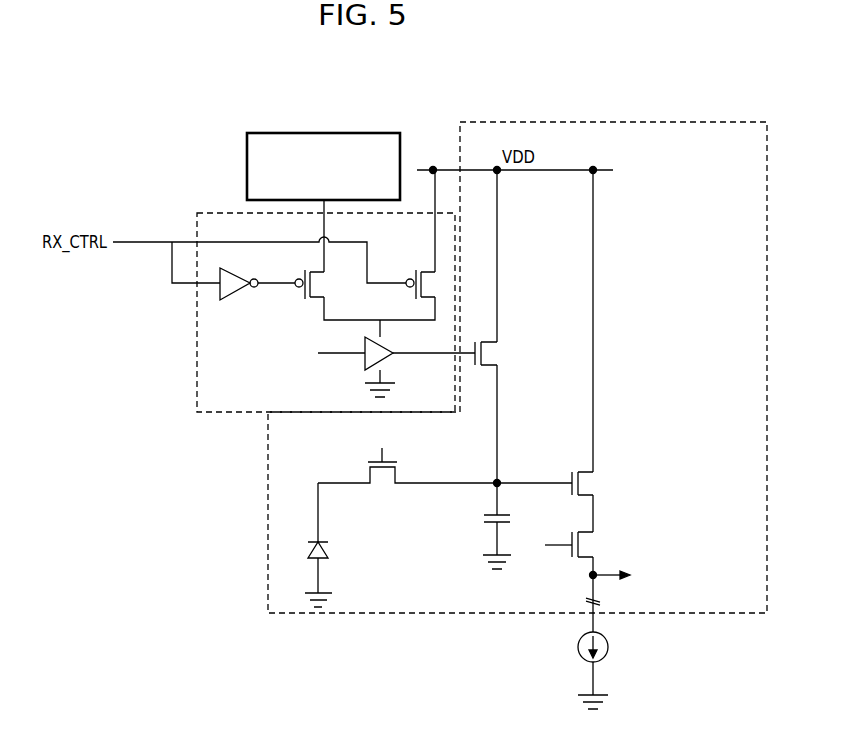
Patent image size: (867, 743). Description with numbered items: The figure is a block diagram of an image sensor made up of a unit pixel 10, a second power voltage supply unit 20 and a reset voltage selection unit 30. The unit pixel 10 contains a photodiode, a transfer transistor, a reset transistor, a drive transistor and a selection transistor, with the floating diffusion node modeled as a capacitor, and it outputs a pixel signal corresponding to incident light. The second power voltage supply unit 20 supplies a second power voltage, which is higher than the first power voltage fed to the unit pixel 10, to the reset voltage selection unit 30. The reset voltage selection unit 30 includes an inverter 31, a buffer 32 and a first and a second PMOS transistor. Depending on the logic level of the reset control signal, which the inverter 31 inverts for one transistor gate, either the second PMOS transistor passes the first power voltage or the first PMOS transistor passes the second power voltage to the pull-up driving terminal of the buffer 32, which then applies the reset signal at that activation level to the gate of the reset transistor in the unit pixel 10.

The unit pixel 10 is at (707, 122).
The second power voltage supply unit 20 is at (367, 133).
The reset voltage selection unit 30 is at (237, 213).
The inverter 31 is at (239, 279).
The buffer 32 is at (392, 352).